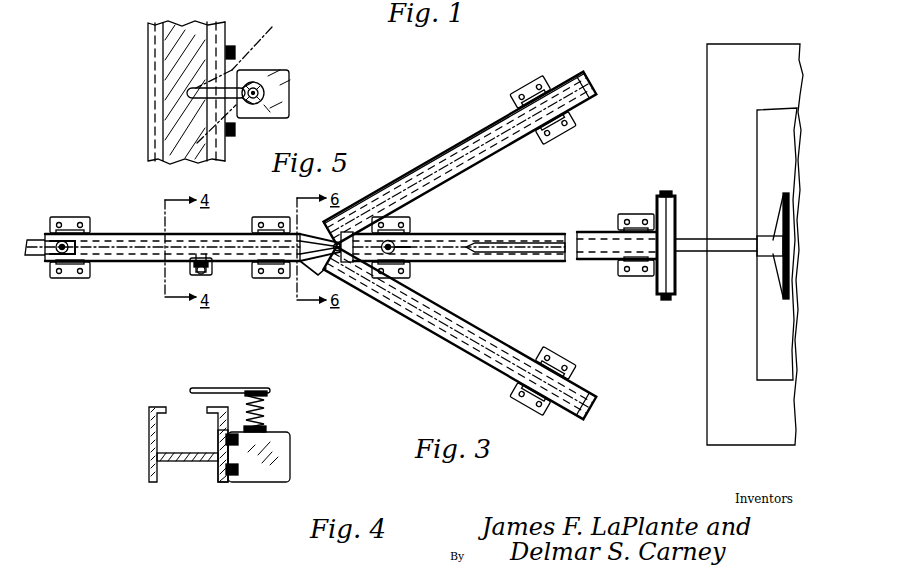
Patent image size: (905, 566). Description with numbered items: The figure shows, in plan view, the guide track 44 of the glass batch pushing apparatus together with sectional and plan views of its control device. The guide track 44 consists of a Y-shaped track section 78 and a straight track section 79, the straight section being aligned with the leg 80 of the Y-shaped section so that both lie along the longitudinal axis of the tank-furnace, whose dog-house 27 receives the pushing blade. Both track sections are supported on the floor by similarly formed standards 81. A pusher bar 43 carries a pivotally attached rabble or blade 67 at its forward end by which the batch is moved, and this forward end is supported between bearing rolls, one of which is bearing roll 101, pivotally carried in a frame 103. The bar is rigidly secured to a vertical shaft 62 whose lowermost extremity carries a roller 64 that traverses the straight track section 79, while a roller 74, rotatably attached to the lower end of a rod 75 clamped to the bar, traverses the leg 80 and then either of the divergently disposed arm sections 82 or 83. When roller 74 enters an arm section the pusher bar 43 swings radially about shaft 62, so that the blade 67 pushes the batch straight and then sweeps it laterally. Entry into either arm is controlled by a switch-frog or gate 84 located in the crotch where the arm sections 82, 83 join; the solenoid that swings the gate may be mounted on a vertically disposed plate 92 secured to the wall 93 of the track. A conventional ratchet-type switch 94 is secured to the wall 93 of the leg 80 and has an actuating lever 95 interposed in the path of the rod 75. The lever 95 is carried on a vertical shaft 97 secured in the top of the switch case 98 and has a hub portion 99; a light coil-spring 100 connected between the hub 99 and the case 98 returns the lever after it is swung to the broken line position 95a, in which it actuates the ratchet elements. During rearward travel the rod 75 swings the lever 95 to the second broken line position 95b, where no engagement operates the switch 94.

In FIG. 3, the dog-house 27 is at (725, 124).
In FIG. 3, the pusher bar 43 is at (474, 242).
In FIG. 3, the guide track 44 is at (405, 170).
In FIG. 3, the shaft 62 is at (393, 242).
In FIG. 3, the roller 64 is at (408, 244).
In FIG. 3, the rabble or blade 67 is at (785, 192).
In FIG. 3, the roller 74 is at (78, 236).
In FIG. 3, the rod 75 is at (64, 241).
In FIG. 3, the Y-shaped track section 78 is at (362, 192).
In FIG. 5, the Y-shaped track section 78 is at (147, 58).
In FIG. 4, the Y-shaped track section 78 is at (148, 424).
In FIG. 3, the straight track section 79 is at (526, 233).
In FIG. 3, the leg 80 is at (135, 234).
In FIG. 5, the leg 80 is at (150, 90).
In FIG. 4, the leg 80 is at (150, 451).
In FIG. 3, the standards 81 is at (84, 276).
In FIG. 3, the arm section 82 is at (444, 152).
In FIG. 3, the arm section 83 is at (443, 329).
In FIG. 3, the switch-frog or gate 84 is at (324, 236).
In FIG. 3, the plate 92 is at (320, 276).
In FIG. 5, the wall 93 is at (232, 36).
In FIG. 4, the wall 93 is at (222, 430).
In FIG. 3, the ratchet-type switch 94 is at (213, 272).
In FIG. 5, the ratchet-type switch 94 is at (270, 69).
In FIG. 4, the ratchet-type switch 94 is at (293, 447).
In FIG. 3, the actuating lever 95 is at (205, 252).
In FIG. 5, the actuating lever 95 is at (240, 112).
In FIG. 4, the actuating lever 95 is at (222, 386).
In FIG. 5, the broken line position 95a is at (246, 48).
In FIG. 5, the second broken line position 95b is at (222, 140).
In FIG. 5, the vertical shaft 97 is at (263, 97).
In FIG. 4, the vertical shaft 97 is at (266, 403).
In FIG. 5, the switch case 98 is at (285, 72).
In FIG. 4, the switch case 98 is at (258, 470).
In FIG. 5, the hub portion 99 is at (288, 114).
In FIG. 4, the hub portion 99 is at (264, 389).
In FIG. 5, the coil-spring 100 is at (265, 88).
In FIG. 4, the coil-spring 100 is at (266, 420).
In FIG. 3, the bearing roll 101 is at (676, 205).
In FIG. 3, the frame 103 is at (662, 190).